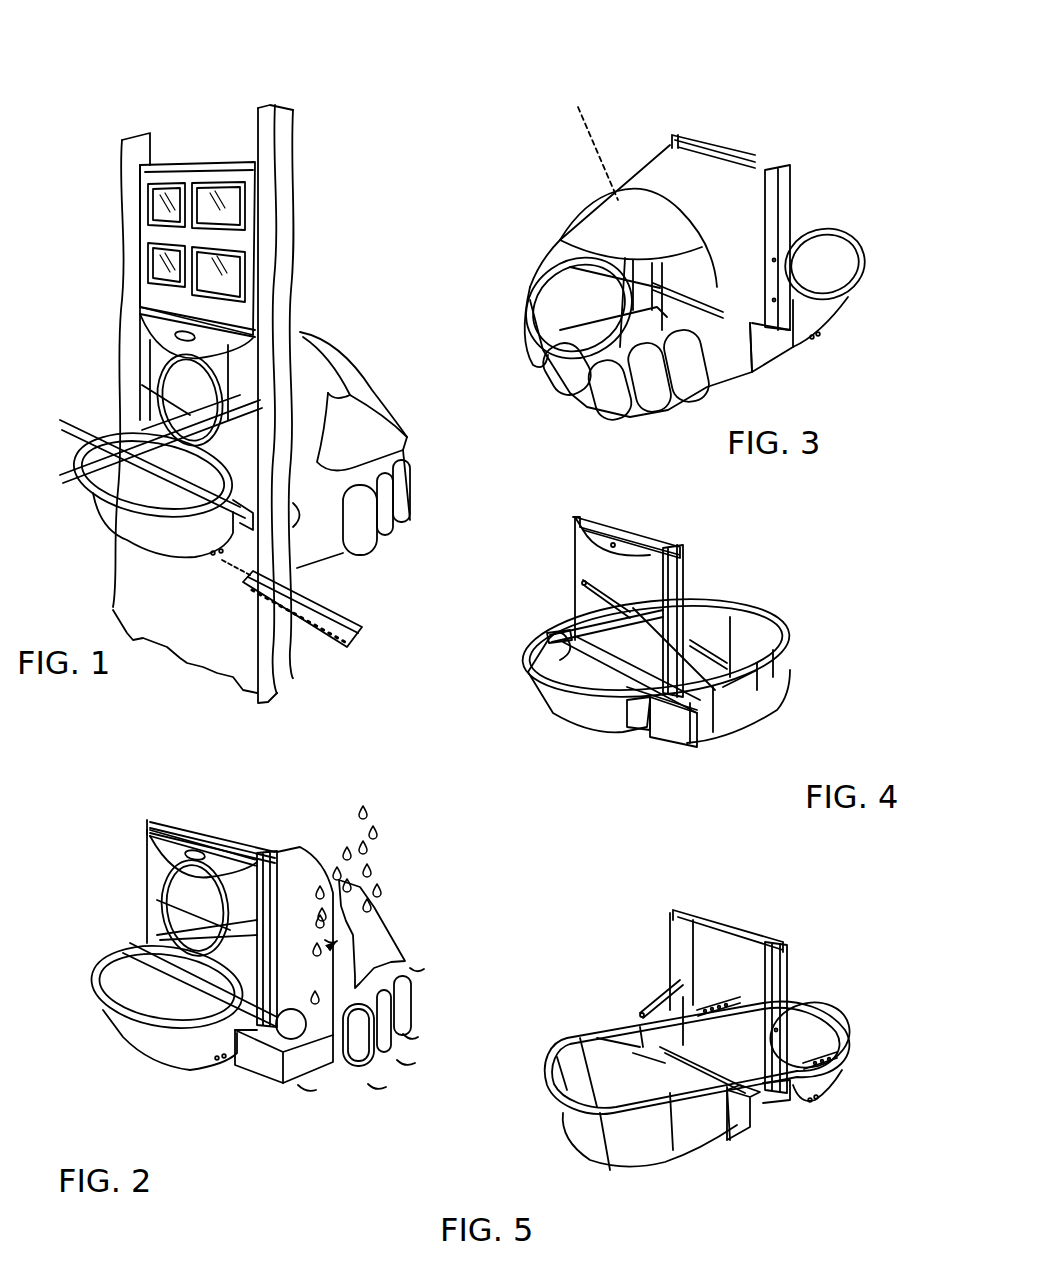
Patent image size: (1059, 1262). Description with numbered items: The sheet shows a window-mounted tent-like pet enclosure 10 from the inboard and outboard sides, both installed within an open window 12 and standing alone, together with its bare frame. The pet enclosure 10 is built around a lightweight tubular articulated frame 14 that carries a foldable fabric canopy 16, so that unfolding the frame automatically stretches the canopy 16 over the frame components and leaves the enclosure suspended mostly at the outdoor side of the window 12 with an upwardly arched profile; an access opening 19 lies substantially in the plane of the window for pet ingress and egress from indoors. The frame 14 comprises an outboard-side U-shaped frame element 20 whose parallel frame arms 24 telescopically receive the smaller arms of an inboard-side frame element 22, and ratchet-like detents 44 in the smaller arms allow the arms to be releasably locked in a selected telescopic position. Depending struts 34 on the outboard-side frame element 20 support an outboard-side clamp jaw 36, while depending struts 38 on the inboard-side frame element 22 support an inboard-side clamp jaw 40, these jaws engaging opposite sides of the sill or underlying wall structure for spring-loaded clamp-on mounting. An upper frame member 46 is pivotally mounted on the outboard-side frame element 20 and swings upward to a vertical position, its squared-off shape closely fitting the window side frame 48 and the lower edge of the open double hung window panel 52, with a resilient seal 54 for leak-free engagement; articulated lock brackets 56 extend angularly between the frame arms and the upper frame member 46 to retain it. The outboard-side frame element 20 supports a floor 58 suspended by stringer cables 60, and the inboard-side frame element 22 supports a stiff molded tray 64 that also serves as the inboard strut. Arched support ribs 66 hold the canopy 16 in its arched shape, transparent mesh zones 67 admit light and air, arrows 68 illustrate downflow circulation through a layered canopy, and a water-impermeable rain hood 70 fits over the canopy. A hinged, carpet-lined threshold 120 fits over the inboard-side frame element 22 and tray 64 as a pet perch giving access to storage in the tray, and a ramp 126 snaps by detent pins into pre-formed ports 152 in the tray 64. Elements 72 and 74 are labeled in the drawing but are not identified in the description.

In FIG. 1, the pet enclosure 10 is at (343, 323).
In FIG. 3, the pet enclosure 10 is at (562, 193).
In FIG. 2, the pet enclosure 10 is at (406, 938).
In FIG. 1, the open window 12 is at (135, 267).
In FIG. 4, the articulated frame 14 is at (752, 578).
In FIG. 5, the articulated frame 14 is at (625, 1198).
In FIG. 1, the foldable canopy 16 is at (347, 377).
In FIG. 3, the foldable canopy 16 is at (648, 180).
In FIG. 2, the foldable canopy 16 is at (312, 844).
In FIG. 1, the access opening 19 is at (83, 477).
In FIG. 4, the outboard-side frame element 20 is at (787, 627).
In FIG. 5, the outboard-side frame element 20 is at (550, 1082).
In FIG. 3, the inboard-side frame element 22 is at (852, 297).
In FIG. 4, the inboard-side frame element 22 is at (525, 653).
In FIG. 2, the inboard-side frame element 22 is at (133, 1017).
In FIG. 5, the inboard-side frame element 22 is at (813, 1012).
In FIG. 5, the frame arms 24 is at (617, 1030).
In FIG. 4, the depending struts 34 is at (723, 690).
In FIG. 5, the depending struts 34 is at (630, 1053).
In FIG. 4, the outboard-side clamp jaw 36 is at (677, 730).
In FIG. 5, the outboard-side clamp jaw 36 is at (753, 1127).
In FIG. 5, the depending struts 38 is at (827, 1083).
In FIG. 4, the inboard-side clamp jaw 40 is at (635, 705).
In FIG. 5, the inboard-side clamp jaw 40 is at (780, 1103).
In FIG. 4, the ratchet-like detents 44 is at (560, 633).
In FIG. 5, the ratchet-like detents 44 is at (717, 1003).
In FIG. 3, the upper frame member 46 is at (777, 198).
In FIG. 4, the upper frame member 46 is at (685, 565).
In FIG. 2, the upper frame member 46 is at (164, 822).
In FIG. 5, the upper frame member 46 is at (790, 960).
In FIG. 1, the side frame 48 is at (152, 147).
In FIG. 1, the double hung window panel 52 is at (237, 223).
In FIG. 4, the resilient seal 54 is at (643, 530).
In FIG. 5, the resilient seal 54 is at (710, 920).
In FIG. 4, the articulated lock brackets 56 is at (608, 593).
In FIG. 5, the articulated lock brackets 56 is at (650, 997).
In FIG. 4, the floor 58 is at (775, 703).
In FIG. 5, the floor 58 is at (650, 1160).
In FIG. 4, the stringer cables 60 is at (775, 673).
In FIG. 5, the stringer cables 60 is at (582, 1070).
In FIG. 1, the tray 64 is at (125, 527).
In FIG. 3, the tray 64 is at (825, 323).
In FIG. 4, the tray 64 is at (560, 712).
In FIG. 2, the tray 64 is at (161, 1059).
In FIG. 3, the arched support ribs 66 is at (581, 149).
In FIG. 3, the transparent zones 67 is at (705, 326).
In FIG. 2, the arrows 68 is at (374, 1079).
In FIG. 2, the rain hood 70 is at (374, 914).
In FIG. 1, the ring 72 is at (187, 377).
In FIG. 3, the ring 72 is at (614, 308).
In FIG. 2, the ring 72 is at (190, 883).
In FIG. 1, the plate 74 is at (240, 363).
In FIG. 2, the plate 74 is at (150, 861).
In FIG. 1, the threshold 120 is at (105, 448).
In FIG. 3, the threshold 120 is at (818, 257).
In FIG. 2, the threshold 120 is at (125, 969).
In FIG. 1, the ramp 126 is at (337, 617).
In FIG. 1, the pre-formed ports 152 is at (210, 555).
In FIG. 2, the pre-formed ports 152 is at (228, 1066).